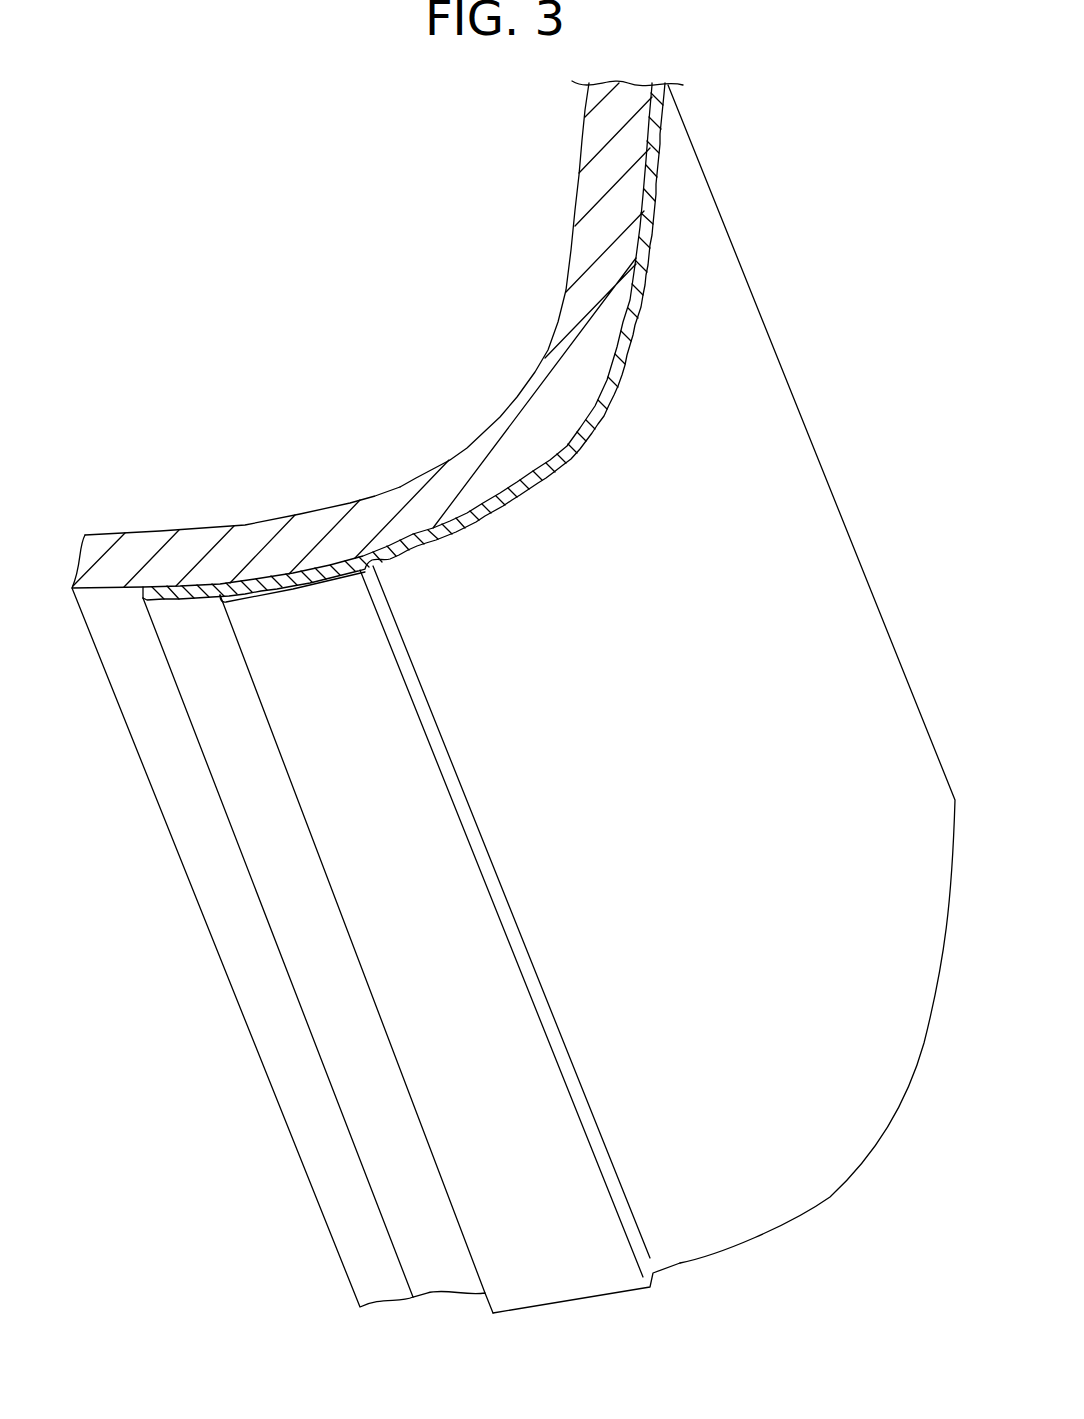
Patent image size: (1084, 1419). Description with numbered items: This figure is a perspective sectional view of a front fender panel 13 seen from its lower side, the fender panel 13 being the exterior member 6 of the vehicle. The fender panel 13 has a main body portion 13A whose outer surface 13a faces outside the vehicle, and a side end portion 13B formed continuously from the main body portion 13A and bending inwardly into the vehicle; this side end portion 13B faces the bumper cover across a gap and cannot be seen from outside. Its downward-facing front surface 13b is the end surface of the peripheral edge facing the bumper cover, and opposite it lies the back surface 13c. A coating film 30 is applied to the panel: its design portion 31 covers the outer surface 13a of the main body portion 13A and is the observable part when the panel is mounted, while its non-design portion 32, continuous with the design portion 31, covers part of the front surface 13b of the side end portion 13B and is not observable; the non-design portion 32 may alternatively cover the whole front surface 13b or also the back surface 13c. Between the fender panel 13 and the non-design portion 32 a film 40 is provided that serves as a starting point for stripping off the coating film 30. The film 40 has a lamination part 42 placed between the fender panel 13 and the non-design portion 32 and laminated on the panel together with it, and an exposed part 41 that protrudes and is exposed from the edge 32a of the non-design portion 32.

The exterior member 6 is at (819, 294).
The fender panel 13 is at (595, 198).
The main body portion 13A is at (645, 112).
The side end portion 13B is at (307, 562).
The outer surface 13a is at (638, 253).
The front surface 13b is at (388, 553).
The back surface 13c is at (215, 522).
The coating film 30 is at (650, 167).
The design portion 31 is at (765, 397).
The non-design portion 32 is at (312, 783).
The edge 32a is at (447, 1195).
The film 40 is at (177, 583).
The exposed part 41 is at (312, 932).
The lamination part 42 is at (350, 502).